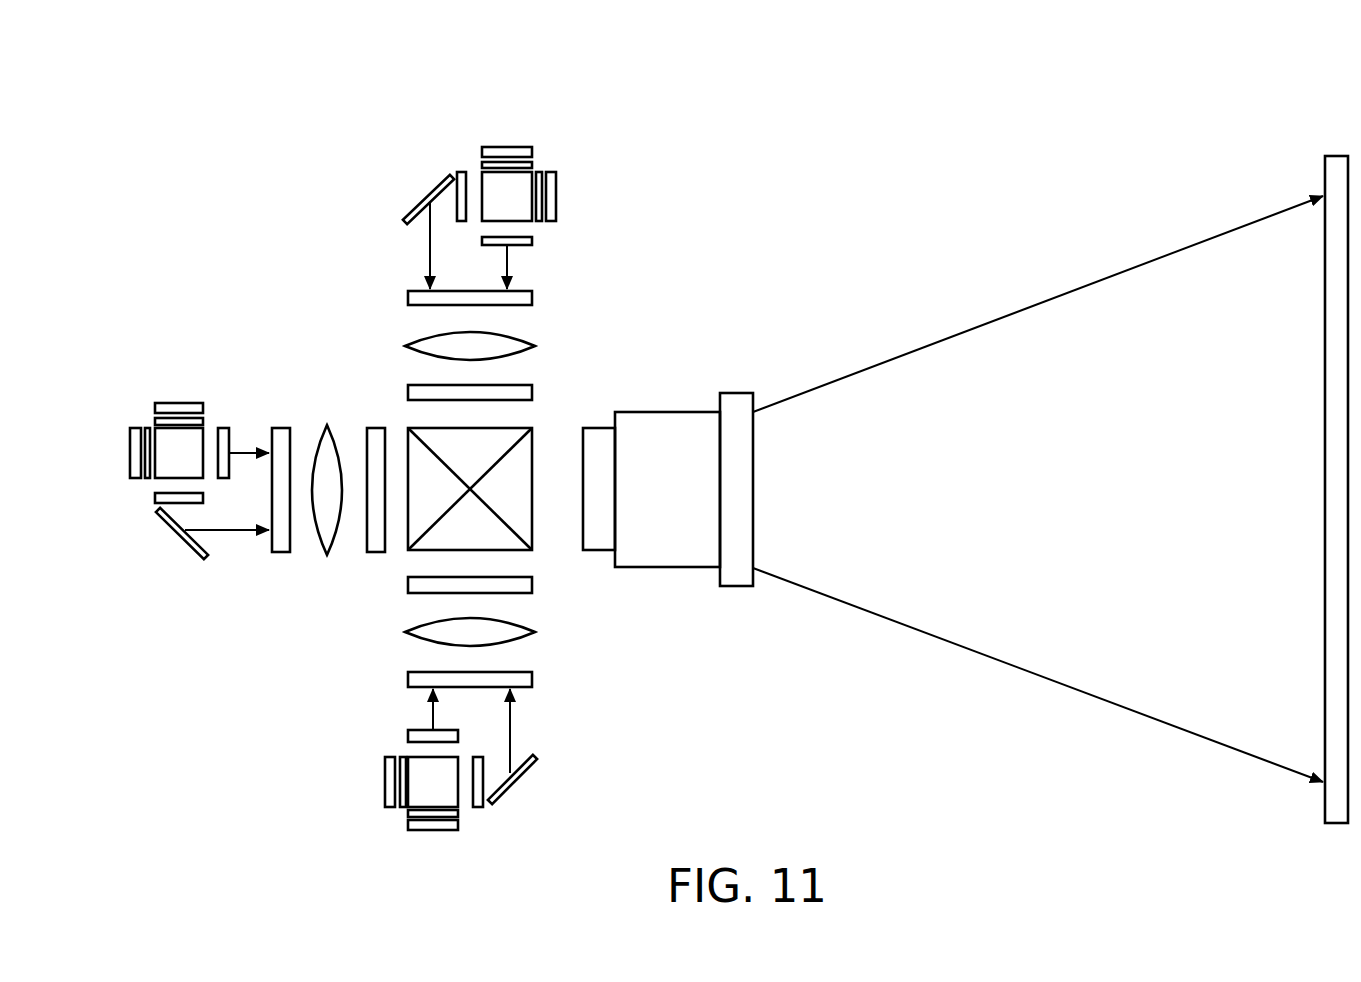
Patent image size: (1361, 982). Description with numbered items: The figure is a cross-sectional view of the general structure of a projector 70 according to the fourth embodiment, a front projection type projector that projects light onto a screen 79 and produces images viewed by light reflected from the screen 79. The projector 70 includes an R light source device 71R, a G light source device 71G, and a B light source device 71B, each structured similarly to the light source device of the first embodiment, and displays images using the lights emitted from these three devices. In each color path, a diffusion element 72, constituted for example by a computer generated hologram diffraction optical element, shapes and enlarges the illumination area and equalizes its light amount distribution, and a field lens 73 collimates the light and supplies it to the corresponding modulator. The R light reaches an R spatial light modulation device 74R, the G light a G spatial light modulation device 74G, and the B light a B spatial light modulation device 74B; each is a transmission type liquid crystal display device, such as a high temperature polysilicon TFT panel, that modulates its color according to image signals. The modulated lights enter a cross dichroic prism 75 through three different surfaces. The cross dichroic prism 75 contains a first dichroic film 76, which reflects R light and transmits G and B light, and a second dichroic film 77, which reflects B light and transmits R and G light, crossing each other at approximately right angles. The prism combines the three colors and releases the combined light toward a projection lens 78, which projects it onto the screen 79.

The projector 70 is at (266, 124).
The R light source device 71R is at (590, 147).
The G light source device 71G is at (228, 372).
The B light source device 71B is at (362, 730).
The diffusion element 72 is at (527, 297).
The field lens 73 is at (520, 345).
The R spatial light modulation device 74R is at (520, 390).
The G spatial light modulation device 74G is at (375, 437).
The B spatial light modulation device 74B is at (415, 582).
The cross dichroic prism 75 is at (495, 461).
The first dichroic film 76 is at (518, 533).
The second dichroic film 77 is at (516, 446).
The projection lens 78 is at (735, 402).
The screen 79 is at (1337, 162).